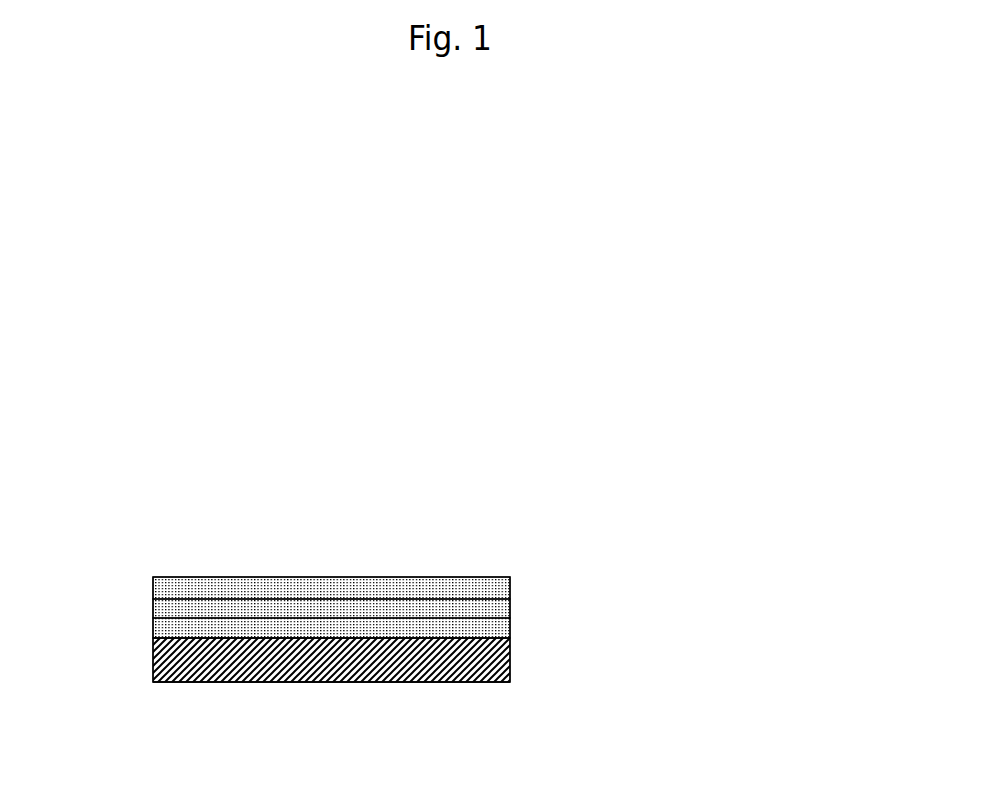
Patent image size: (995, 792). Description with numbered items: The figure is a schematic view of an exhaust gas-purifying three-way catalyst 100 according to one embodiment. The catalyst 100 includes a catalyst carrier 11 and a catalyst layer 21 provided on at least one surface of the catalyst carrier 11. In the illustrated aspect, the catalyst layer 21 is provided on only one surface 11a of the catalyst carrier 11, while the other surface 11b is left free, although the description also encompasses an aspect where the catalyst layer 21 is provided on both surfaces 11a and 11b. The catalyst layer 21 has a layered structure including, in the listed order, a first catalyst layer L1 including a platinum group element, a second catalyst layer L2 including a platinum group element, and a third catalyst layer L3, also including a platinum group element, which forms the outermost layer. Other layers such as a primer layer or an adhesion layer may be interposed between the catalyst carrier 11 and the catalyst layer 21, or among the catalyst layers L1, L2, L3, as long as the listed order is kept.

The exhaust gas-purifying three-way catalyst 100 is at (447, 627).
The catalyst layer 21 is at (450, 585).
The catalyst carrier 11 is at (512, 659).
The one surface 11a is at (385, 631).
The other surface 11b is at (183, 683).
The first catalyst layer L1 is at (512, 625).
The second catalyst layer L2 is at (512, 605).
The third catalyst layer L3 is at (512, 585).